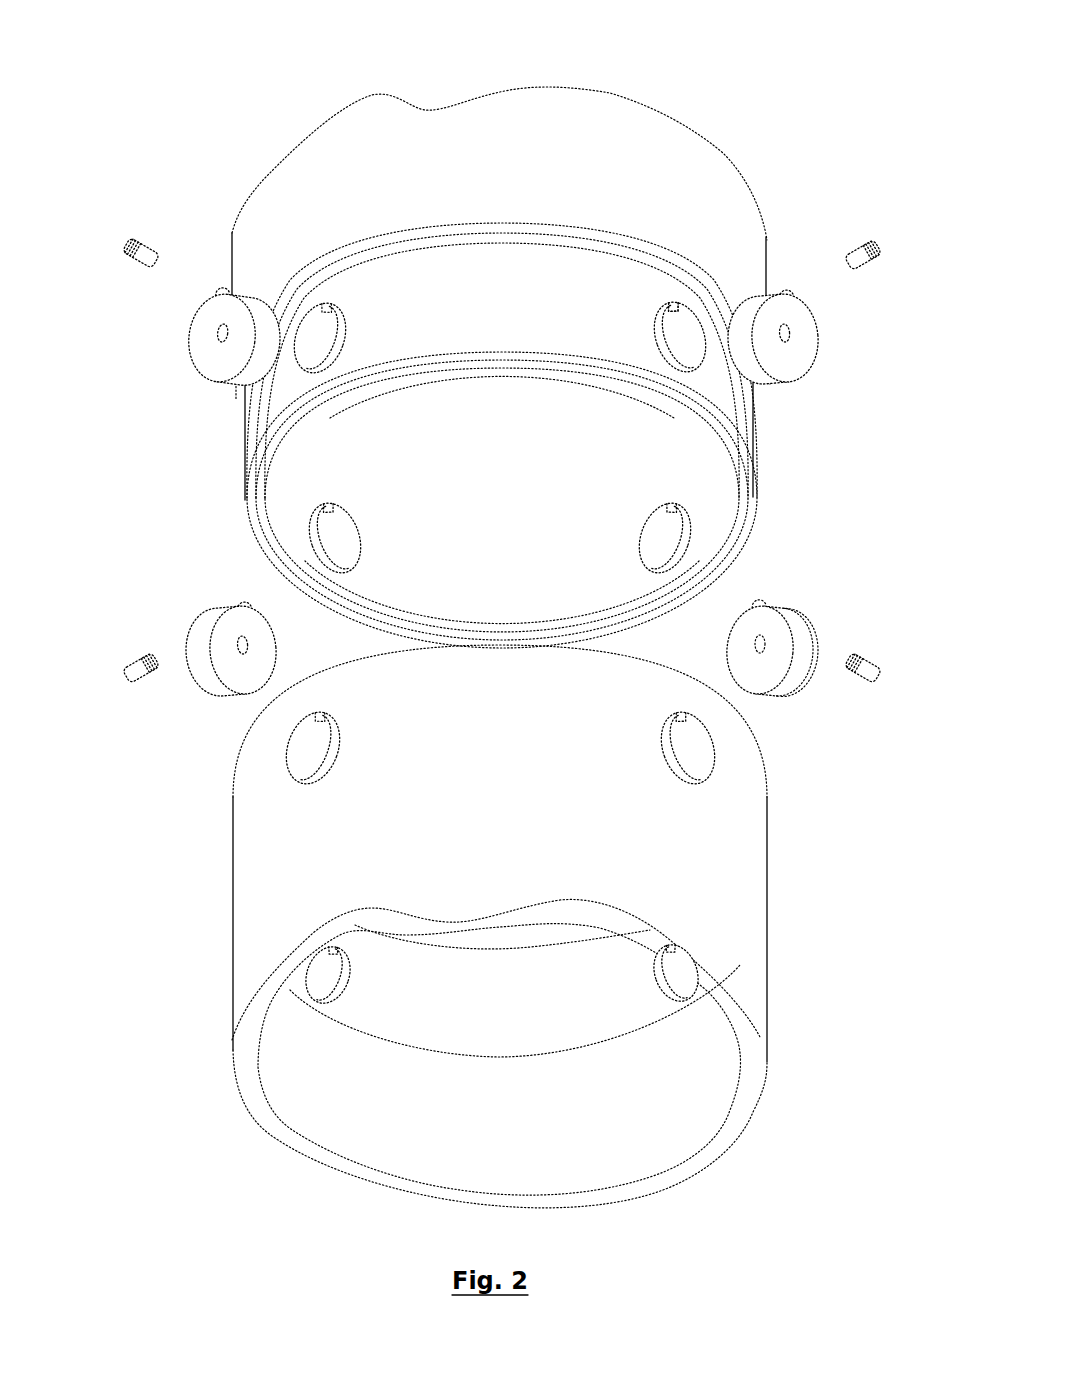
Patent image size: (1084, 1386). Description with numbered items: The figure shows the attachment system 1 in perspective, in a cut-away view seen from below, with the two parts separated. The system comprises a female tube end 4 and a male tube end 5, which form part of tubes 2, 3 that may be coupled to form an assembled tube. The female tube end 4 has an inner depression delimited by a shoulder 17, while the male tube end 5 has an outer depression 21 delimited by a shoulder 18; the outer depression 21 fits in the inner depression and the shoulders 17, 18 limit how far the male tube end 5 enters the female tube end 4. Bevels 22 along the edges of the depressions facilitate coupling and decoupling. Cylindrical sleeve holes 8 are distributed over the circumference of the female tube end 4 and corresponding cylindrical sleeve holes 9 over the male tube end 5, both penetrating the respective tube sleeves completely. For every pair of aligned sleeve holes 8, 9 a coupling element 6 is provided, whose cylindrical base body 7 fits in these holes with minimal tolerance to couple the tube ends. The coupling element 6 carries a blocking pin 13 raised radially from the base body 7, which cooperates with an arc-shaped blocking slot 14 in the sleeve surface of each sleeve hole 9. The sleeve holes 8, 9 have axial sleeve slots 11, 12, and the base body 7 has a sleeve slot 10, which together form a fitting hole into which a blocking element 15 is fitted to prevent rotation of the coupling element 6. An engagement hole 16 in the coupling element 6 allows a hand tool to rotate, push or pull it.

The attachment system 1 is at (210, 145).
The tube 2 is at (285, 1097).
The tube 3 is at (639, 128).
The female tube end 4 is at (782, 851).
The male tube end 5 is at (768, 446).
The coupling element 6 is at (180, 343).
The cylindrical base body 7 is at (800, 637).
The cylindrical sleeve hole 8 is at (313, 757).
The cylindrical sleeve hole 9 is at (313, 350).
The sleeve slot 10 is at (758, 604).
The sleeve slot 11 is at (310, 717).
The sleeve slot 12 is at (678, 300).
The blocking pin 13 is at (785, 610).
The blocking slot 14 is at (313, 313).
The blocking element 15 is at (132, 247).
The engagement hole 16 is at (753, 647).
The shoulder 17 is at (395, 1045).
The shoulder 18 is at (373, 250).
The outer depression 21 is at (262, 425).
The bevel 22 is at (508, 225).